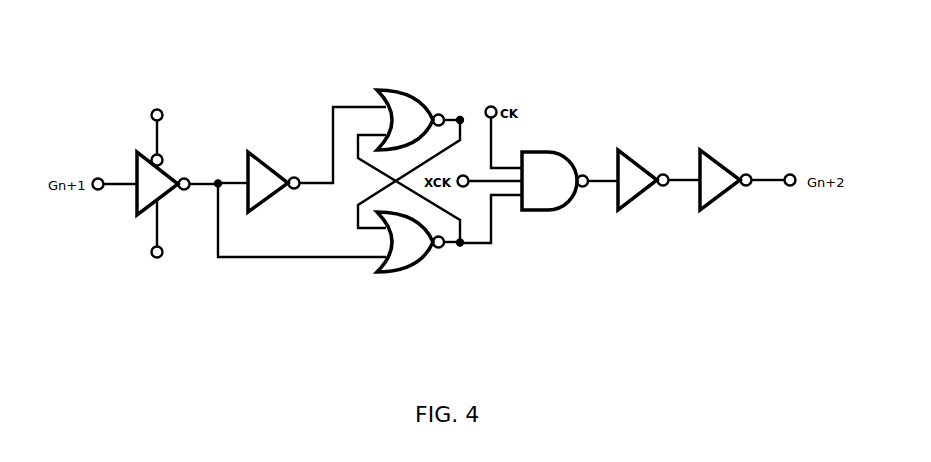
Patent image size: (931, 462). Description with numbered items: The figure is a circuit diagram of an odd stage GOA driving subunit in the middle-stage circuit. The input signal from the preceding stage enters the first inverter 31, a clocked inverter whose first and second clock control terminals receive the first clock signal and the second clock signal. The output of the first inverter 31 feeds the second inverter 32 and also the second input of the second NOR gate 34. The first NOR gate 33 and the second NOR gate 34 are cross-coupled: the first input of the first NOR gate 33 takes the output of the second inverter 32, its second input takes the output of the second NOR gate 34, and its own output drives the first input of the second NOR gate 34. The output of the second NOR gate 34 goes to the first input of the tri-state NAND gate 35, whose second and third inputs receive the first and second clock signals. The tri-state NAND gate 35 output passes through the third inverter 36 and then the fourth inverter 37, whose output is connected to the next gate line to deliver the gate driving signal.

The first inverter 31 is at (132, 162).
The second inverter 32 is at (258, 152).
The first NOR gate 33 is at (413, 87).
The second NOR gate 34 is at (420, 265).
The tri-state NAND gate 35 is at (552, 148).
The third inverter 36 is at (623, 150).
The fourth inverter 37 is at (705, 150).